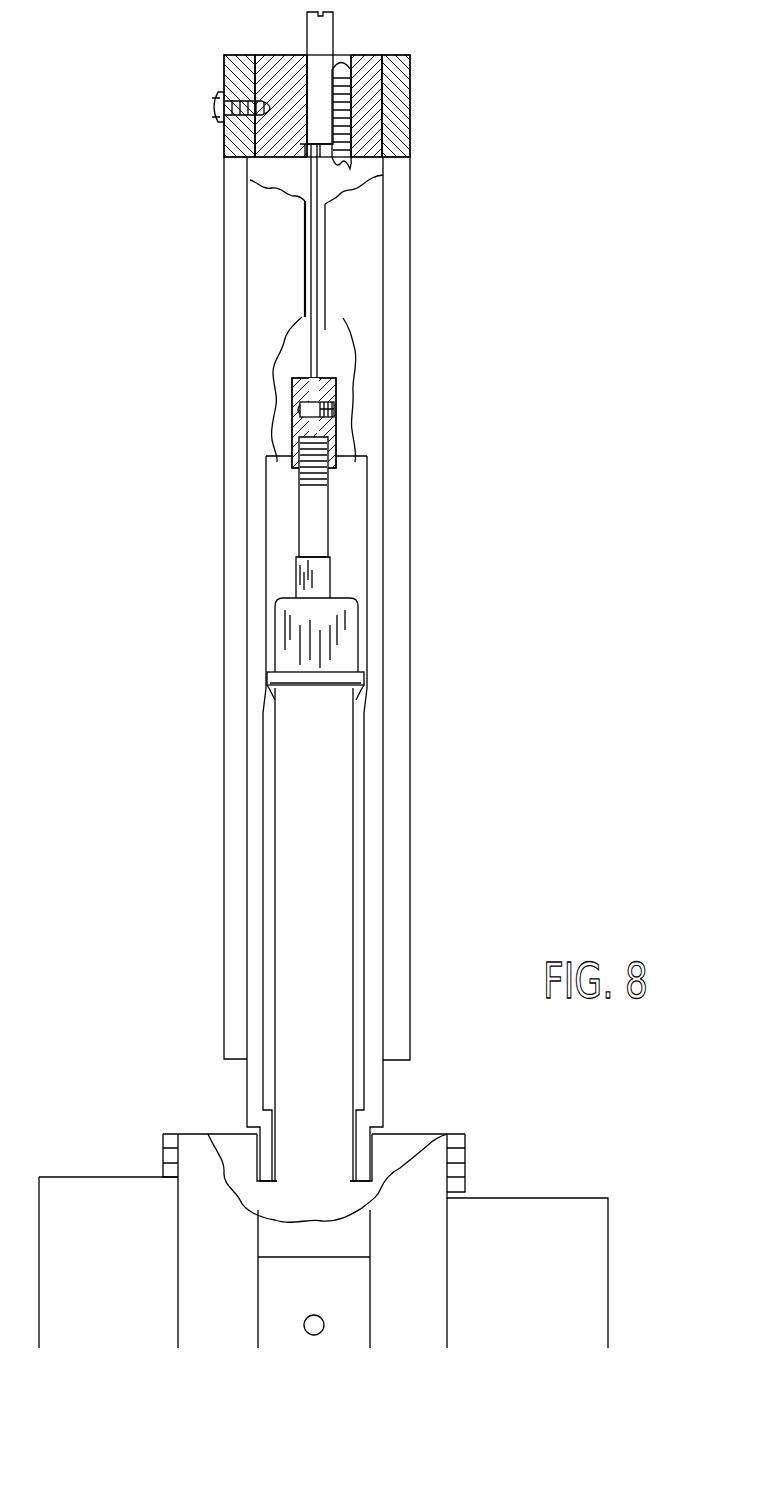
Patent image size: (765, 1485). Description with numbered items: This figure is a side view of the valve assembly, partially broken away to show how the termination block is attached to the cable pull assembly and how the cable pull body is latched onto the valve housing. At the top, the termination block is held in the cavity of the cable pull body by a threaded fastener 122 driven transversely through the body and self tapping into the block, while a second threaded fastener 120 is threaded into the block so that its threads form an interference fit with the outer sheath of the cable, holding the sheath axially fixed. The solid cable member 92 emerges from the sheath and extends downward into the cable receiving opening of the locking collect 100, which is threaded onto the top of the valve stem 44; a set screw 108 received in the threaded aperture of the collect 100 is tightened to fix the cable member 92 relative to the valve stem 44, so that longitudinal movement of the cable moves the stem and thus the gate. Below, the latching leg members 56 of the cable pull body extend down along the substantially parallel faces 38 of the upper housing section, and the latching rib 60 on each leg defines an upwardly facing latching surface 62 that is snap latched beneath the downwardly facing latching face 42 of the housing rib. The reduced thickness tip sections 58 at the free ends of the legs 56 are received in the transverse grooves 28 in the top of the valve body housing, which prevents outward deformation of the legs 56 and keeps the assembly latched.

The transverse groove 28 is at (373, 1178).
The parallel face 38 is at (338, 825).
The latching face 42 is at (325, 690).
The valve stem 44 is at (318, 508).
The latching leg member 56 is at (392, 642).
The reduced thickness tip section 58 is at (265, 1152).
The latching rib 60 is at (266, 695).
The latching surface 62 is at (365, 672).
The solid cable member 92 is at (318, 330).
The locking collect 100 is at (336, 390).
The set screw 108 is at (335, 405).
The threaded fastener 120 is at (352, 113).
The threaded fastener 122 is at (212, 102).